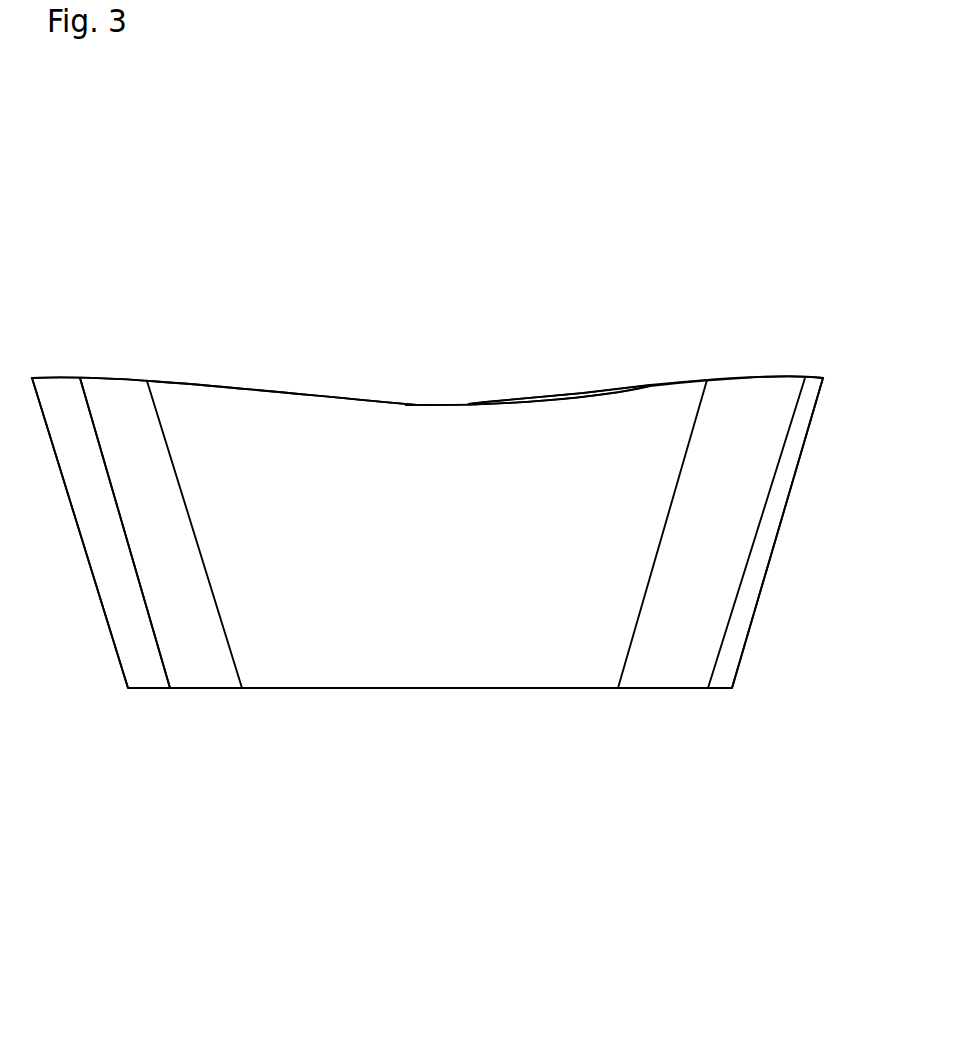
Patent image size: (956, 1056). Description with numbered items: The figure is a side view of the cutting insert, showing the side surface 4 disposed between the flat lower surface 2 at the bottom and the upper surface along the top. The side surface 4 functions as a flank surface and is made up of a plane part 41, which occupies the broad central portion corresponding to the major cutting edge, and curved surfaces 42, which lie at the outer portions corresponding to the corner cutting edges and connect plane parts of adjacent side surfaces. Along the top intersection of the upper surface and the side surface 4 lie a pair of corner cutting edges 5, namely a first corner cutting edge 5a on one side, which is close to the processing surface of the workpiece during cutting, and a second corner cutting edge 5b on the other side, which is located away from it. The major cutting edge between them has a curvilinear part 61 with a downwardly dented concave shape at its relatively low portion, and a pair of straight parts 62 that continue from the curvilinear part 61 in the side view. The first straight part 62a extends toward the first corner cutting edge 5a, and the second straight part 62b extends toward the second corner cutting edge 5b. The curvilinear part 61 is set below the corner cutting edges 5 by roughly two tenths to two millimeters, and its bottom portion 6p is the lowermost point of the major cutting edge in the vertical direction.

The lower surface 2 is at (335, 692).
The side surface 4 is at (393, 610).
The plane part 41 is at (446, 657).
The curved surface 42 is at (188, 655).
The corner cutting edges 5 is at (436, 443).
The first corner cutting edge 5a is at (82, 383).
The second corner cutting edge 5b is at (805, 377).
The curvilinear part 61 is at (418, 405).
The straight parts 62 is at (427, 329).
The first straight part 62a is at (218, 385).
The second straight part 62b is at (648, 385).
The bottom portion 6p is at (467, 405).